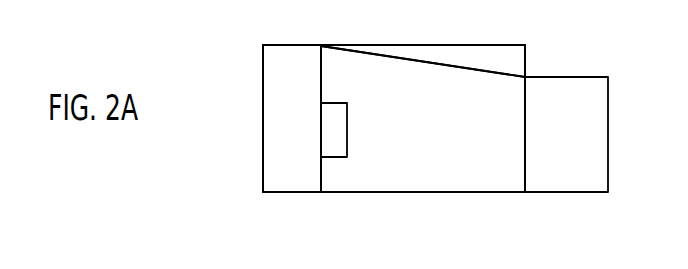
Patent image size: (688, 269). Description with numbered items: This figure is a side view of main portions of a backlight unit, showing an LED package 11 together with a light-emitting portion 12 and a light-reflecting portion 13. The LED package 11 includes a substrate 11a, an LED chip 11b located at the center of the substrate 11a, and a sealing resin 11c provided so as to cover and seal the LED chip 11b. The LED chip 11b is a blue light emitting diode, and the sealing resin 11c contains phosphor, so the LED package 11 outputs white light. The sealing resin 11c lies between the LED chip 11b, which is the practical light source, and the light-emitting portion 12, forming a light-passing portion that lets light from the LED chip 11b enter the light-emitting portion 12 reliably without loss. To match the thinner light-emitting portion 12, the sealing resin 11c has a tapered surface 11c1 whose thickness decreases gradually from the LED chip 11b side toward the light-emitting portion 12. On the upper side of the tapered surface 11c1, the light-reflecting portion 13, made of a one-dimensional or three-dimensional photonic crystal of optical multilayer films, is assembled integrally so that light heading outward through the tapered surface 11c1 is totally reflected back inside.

The LED package 11 is at (260, 127).
The substrate 11a is at (293, 58).
The LED chip 11b is at (337, 143).
The sealing resin 11c is at (413, 173).
The tapered surface 11c1 is at (437, 59).
The light-emitting portion 12 is at (592, 138).
The light-reflecting portion 13 is at (495, 59).